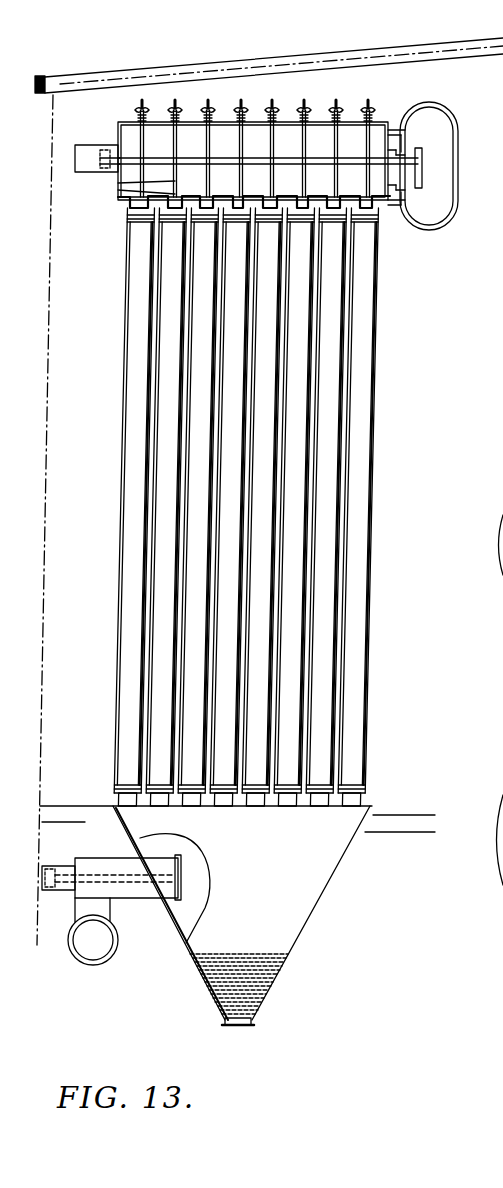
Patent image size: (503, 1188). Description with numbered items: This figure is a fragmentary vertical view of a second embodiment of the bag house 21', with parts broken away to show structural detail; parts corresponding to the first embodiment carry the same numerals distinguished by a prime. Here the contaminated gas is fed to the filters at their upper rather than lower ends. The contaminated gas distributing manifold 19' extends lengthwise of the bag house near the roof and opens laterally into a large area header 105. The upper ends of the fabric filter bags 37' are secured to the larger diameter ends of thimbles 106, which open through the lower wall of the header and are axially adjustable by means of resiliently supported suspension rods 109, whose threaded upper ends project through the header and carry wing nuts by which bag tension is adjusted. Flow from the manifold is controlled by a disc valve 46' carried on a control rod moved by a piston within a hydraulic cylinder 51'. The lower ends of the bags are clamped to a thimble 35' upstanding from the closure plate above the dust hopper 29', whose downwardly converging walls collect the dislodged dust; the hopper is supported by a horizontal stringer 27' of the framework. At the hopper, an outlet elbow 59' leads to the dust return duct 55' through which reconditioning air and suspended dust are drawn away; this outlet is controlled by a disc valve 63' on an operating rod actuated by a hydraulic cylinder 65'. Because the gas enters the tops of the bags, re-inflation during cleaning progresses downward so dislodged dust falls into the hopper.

The bag house 21' is at (269, 479).
The hydraulic cylinder 51' is at (93, 137).
The header 105 is at (348, 122).
The suspension rods 109 is at (118, 185).
The thimbles 106 is at (132, 204).
The contaminated gas distributing manifold 19' is at (425, 187).
The disc valve 46' is at (452, 168).
The filter bags 37' is at (223, 507).
The thimble 35' is at (227, 810).
The stringers 27' is at (274, 915).
The dust hoppers 29' is at (265, 984).
The disc valve 63' is at (158, 888).
The hydraulic cylinder 65' is at (108, 863).
The outlet elbow 59' is at (115, 920).
The dust return duct 55' is at (93, 961).